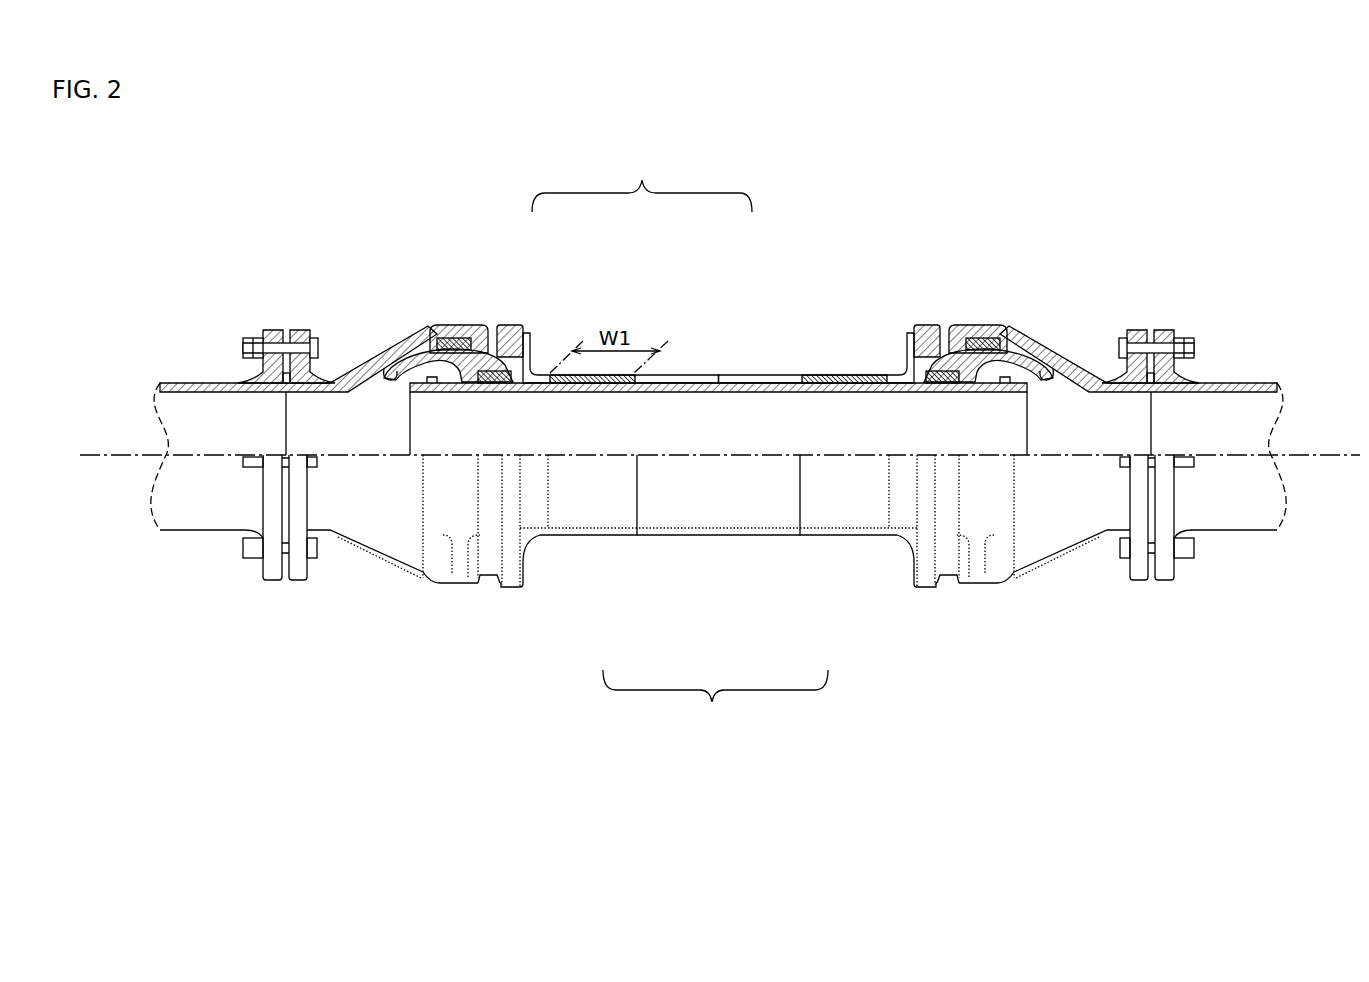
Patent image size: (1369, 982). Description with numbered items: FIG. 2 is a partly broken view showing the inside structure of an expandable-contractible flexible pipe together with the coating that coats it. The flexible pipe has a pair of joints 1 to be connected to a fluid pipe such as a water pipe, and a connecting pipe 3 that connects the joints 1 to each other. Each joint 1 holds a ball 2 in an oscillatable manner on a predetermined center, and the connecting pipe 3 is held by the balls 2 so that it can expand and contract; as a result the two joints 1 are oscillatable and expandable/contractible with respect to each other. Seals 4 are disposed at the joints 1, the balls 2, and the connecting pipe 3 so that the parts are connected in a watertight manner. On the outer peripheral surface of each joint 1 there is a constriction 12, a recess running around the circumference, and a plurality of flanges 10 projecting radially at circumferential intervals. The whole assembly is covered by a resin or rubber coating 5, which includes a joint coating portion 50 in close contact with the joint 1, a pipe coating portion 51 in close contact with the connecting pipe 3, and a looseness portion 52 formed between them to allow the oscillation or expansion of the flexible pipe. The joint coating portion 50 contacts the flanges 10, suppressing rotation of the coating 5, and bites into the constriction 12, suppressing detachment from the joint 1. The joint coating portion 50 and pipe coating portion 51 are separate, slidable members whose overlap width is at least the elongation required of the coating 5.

The joint 1 is at (384, 602).
The ball 2 is at (386, 380).
The connecting pipe 3 is at (727, 507).
The seal 4 is at (990, 350).
The coating 5 is at (680, 441).
The flange 10 is at (456, 582).
The constriction 12 is at (483, 593).
The joint coating portion 50 is at (447, 326).
The pipe coating portion 51 is at (705, 378).
The looseness portion 52 is at (624, 306).